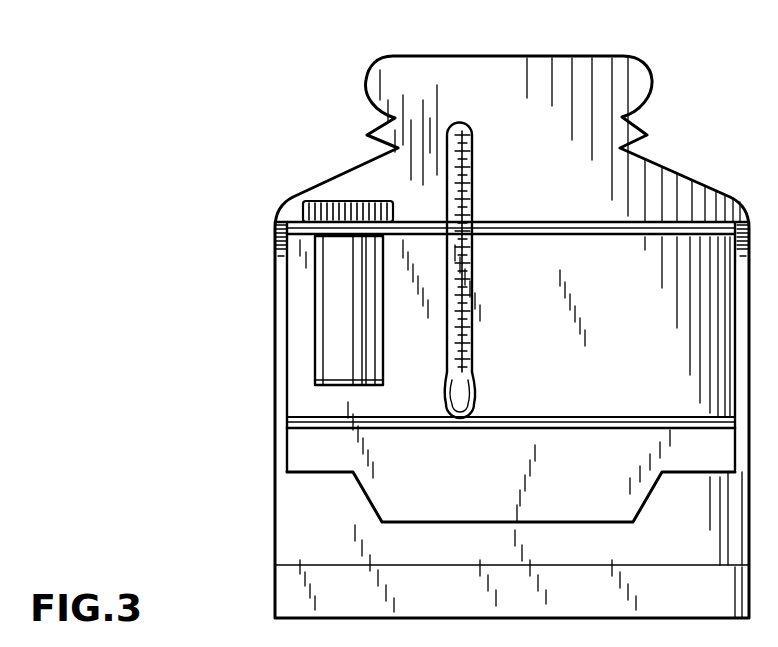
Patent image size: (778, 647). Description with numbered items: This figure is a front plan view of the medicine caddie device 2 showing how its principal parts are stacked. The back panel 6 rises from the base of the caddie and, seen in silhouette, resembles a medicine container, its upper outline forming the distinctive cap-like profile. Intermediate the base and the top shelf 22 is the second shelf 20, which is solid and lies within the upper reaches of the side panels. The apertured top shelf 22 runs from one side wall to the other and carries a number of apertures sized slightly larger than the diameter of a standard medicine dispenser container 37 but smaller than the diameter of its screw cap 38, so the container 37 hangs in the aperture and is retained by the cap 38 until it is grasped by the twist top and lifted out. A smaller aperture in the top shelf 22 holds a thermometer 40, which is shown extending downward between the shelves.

The device 2 is at (284, 38).
The back panel 6 is at (530, 123).
The second shelf 20 is at (563, 417).
The top shelf 22 is at (560, 221).
The medicine dispenser container 37 is at (358, 360).
The screw cap 38 is at (335, 201).
The thermometer 40 is at (472, 170).